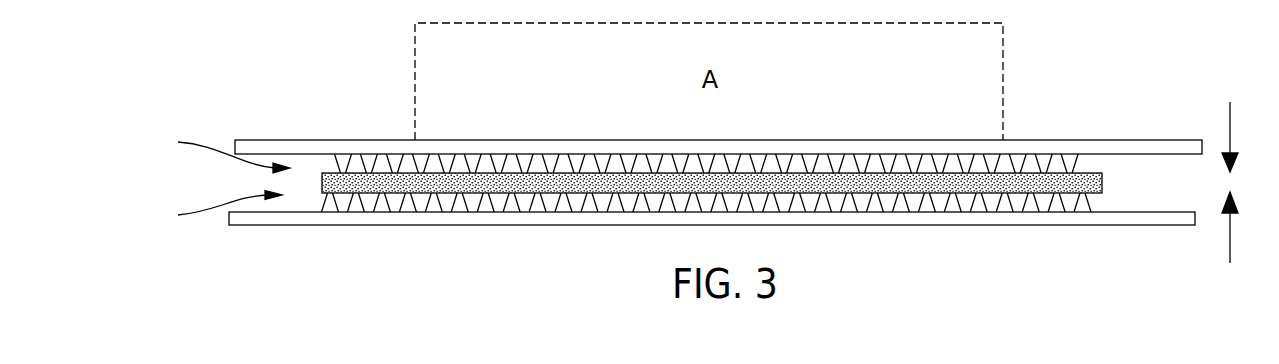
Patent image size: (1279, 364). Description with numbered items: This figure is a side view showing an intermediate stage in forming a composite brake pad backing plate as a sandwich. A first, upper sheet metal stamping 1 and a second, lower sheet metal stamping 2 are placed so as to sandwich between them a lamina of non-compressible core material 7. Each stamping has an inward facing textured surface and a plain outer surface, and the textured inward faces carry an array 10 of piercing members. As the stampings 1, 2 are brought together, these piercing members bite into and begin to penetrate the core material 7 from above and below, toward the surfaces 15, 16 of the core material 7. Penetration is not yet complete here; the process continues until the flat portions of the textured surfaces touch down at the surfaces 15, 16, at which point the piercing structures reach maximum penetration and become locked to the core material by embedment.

The first sheet metal stamping 1 is at (1163, 145).
The second sheet metal stamping 2 is at (882, 213).
The core material 7 is at (1103, 182).
The array of piercing members 10 is at (215, 179).
The surface of the core material 15 is at (360, 172).
The surface of the core material 16 is at (348, 196).